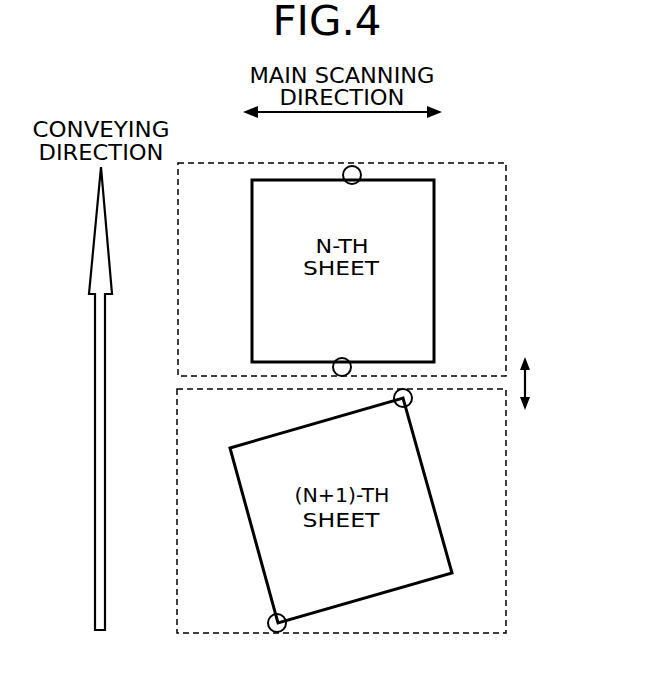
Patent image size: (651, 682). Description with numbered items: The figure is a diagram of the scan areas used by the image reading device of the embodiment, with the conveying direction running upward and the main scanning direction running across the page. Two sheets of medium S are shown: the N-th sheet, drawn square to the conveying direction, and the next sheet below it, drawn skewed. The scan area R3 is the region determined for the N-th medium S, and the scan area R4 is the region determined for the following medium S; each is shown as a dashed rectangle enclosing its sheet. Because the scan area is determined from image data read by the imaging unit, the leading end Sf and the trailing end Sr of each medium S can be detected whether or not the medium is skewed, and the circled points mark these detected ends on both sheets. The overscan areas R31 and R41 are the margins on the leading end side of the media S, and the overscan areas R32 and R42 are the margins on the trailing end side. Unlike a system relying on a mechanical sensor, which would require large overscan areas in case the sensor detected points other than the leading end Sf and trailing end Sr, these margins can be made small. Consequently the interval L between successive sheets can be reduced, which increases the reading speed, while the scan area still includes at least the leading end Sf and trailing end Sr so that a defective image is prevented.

The scan area for N-th sheet R3 is at (506, 218).
The scan area for (N+1)-th sheet R4 is at (506, 560).
The medium S is at (434, 273).
The leading end Sf is at (392, 178).
The trailing end Sr is at (286, 362).
The overscan area on leading end side R31 is at (436, 173).
The overscan area on trailing end side R32 is at (436, 367).
The overscan area on leading end side R41 is at (419, 398).
The overscan area on trailing end side R42 is at (304, 627).
The interval between sheets L is at (536, 383).